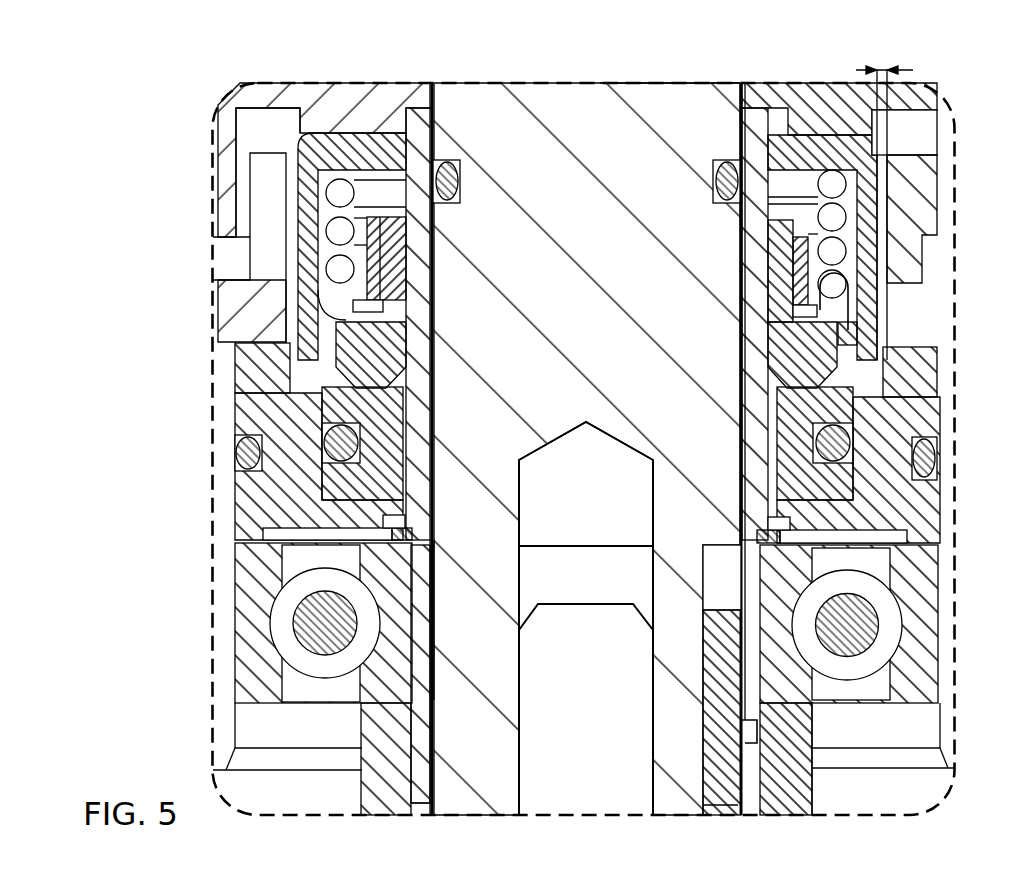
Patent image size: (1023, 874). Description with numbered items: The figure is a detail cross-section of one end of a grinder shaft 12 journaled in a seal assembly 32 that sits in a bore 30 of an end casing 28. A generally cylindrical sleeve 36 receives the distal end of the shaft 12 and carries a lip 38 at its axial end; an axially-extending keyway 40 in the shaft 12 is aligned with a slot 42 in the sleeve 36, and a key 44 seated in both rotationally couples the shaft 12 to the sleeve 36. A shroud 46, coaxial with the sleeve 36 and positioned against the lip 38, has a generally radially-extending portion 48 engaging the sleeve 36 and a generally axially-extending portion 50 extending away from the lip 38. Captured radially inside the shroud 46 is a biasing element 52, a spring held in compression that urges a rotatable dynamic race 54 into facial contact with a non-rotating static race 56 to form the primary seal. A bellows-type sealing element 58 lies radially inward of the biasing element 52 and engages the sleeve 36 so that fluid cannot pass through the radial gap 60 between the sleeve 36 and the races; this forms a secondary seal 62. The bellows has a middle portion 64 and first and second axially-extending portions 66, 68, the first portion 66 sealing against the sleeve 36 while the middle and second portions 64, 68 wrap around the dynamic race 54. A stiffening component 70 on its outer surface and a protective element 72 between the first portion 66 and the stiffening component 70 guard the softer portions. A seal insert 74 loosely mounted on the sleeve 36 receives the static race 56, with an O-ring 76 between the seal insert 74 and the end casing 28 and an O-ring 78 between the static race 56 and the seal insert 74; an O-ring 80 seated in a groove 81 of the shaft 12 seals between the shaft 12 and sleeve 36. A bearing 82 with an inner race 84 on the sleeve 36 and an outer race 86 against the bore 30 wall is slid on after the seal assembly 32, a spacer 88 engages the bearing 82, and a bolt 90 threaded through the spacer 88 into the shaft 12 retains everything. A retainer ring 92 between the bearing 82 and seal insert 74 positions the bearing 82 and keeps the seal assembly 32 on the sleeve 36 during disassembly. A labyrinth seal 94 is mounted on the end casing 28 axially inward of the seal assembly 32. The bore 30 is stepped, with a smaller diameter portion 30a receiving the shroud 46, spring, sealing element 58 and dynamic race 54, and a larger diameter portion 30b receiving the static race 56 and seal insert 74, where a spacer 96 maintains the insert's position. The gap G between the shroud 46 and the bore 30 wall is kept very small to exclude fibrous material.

The shaft 12 is at (562, 105).
The end casing 28 is at (941, 558).
The bore 30 is at (664, 107).
The smaller diameter portion 30a is at (294, 160).
The larger diameter portion 30b is at (240, 434).
The seal assembly 32 is at (920, 497).
The sleeve 36 is at (736, 661).
The lip 38 is at (772, 107).
The keyway 40 is at (716, 566).
The slot 42 is at (748, 741).
The key 44 is at (730, 790).
The shroud 46 is at (300, 196).
The generally radially-extending portion 48 is at (356, 149).
The generally axially-extending portion 50 is at (300, 246).
The biasing element 52 is at (844, 218).
The dynamic race 54 is at (792, 347).
The static race 56 is at (816, 406).
The sealing element 58 is at (782, 254).
The radial gap 60 is at (760, 362).
The secondary seal 62 is at (792, 272).
The middle portion 64 is at (788, 324).
The first axially-extending portion 66 is at (736, 200).
The second axially-extending portion 68 is at (838, 333).
The stiffening component 70 is at (848, 316).
The protective element 72 is at (876, 254).
The seal insert 74 is at (920, 422).
The O-ring 76 is at (931, 458).
The O-ring 78 is at (355, 441).
The O-ring 80 is at (450, 198).
The groove 81 is at (460, 174).
The bearing 82 is at (905, 606).
The inner race 84 is at (404, 636).
The outer race 86 is at (260, 616).
The spacer 88 is at (392, 790).
The bolt 90 is at (590, 790).
The retainer ring 92 is at (413, 535).
The labyrinth seal 94 is at (326, 107).
The spacer 96 is at (252, 366).
The gap G is at (883, 68).